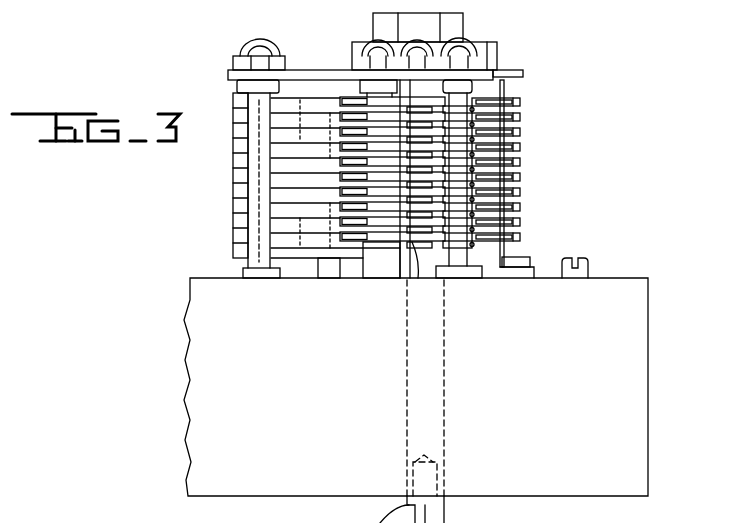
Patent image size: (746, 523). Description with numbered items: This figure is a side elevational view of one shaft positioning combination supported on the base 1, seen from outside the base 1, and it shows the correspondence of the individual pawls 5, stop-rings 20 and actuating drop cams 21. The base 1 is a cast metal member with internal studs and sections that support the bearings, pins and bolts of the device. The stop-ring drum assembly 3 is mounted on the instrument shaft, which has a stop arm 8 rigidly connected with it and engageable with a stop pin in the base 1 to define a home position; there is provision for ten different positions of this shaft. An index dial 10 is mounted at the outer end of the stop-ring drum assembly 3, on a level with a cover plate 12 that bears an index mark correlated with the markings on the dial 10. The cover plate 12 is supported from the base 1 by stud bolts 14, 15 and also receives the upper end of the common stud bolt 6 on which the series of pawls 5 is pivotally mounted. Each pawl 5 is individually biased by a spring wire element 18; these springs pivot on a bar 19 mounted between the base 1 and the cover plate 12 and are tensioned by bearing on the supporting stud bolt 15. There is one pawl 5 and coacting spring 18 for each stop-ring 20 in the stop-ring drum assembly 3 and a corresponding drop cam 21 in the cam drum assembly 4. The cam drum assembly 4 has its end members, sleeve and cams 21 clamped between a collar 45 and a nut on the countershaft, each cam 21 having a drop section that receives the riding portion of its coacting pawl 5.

The base 1 is at (633, 352).
The stop-ring drum assembly 3 is at (507, 86).
The cam drum assembly 4 is at (227, 189).
The pawls 5 is at (517, 112).
The stud bolt 6 is at (380, 80).
The stop arm 8 is at (531, 260).
The index dial 10 is at (513, 67).
The cover plate 12 is at (228, 75).
The stud bolt 14 is at (245, 232).
The stud bolt 15 is at (517, 162).
The spring wire elements 18 is at (547, 199).
The bar 19 is at (417, 90).
The stop-rings 20 is at (522, 192).
The drop cams 21 is at (235, 140).
The collar 45 is at (293, 268).